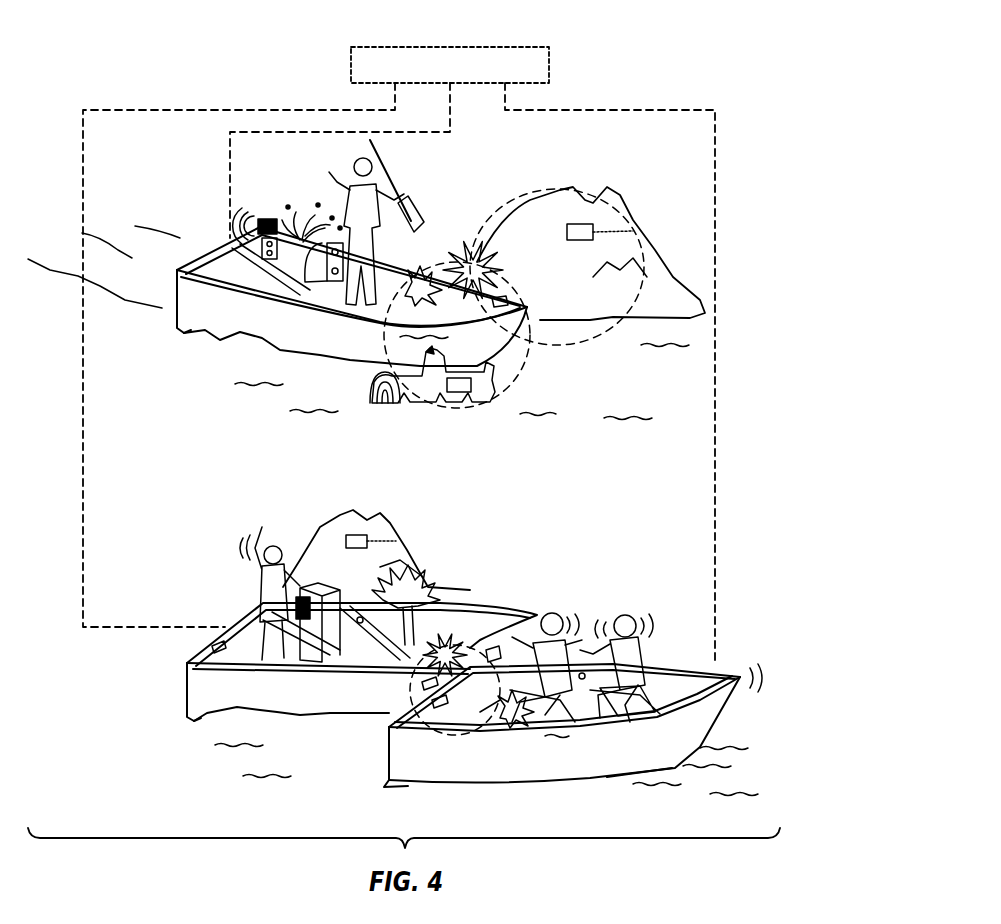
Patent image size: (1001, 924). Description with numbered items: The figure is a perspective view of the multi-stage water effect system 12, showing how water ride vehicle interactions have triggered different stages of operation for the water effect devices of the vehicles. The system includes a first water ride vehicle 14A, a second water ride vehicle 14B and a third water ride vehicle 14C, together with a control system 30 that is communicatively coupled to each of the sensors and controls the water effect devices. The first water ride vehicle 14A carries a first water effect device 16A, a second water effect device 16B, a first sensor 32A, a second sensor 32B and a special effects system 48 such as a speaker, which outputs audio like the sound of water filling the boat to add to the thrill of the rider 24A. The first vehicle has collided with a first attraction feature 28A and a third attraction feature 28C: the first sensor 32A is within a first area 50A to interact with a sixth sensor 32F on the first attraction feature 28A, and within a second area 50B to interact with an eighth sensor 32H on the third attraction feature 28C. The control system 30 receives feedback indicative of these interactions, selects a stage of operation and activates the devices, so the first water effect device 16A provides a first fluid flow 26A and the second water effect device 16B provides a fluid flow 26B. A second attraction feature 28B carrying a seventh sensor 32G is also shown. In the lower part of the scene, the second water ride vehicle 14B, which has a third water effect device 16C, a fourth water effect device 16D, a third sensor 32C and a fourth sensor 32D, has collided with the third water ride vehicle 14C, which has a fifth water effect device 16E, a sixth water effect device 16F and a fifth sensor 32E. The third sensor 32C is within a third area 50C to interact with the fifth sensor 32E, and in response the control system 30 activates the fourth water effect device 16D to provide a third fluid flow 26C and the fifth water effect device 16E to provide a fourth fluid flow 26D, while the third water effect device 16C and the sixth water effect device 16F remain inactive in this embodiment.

The multi-stage water effect system 12 is at (644, 34).
The control system 30 is at (450, 47).
The first water ride vehicle 14A is at (218, 247).
The second water ride vehicle 14B is at (240, 618).
The third water ride vehicle 14C is at (722, 670).
The first water effect device 16A is at (408, 283).
The second water effect device 16B is at (293, 278).
The third water effect device 16C is at (253, 310).
The fourth water effect device 16D is at (388, 760).
The fifth water effect device 16E is at (518, 648).
The sixth water effect device 16F is at (595, 652).
The rider 24A is at (356, 160).
The first fluid flow 26A is at (378, 298).
The fluid flow 26B is at (301, 198).
The third fluid flow 26C is at (447, 587).
The fourth fluid flow 26D is at (545, 730).
The first attraction feature 28A is at (485, 220).
The second attraction feature 28B is at (305, 540).
The third attraction feature 28C is at (375, 398).
The first sensor 32A is at (498, 306).
The second sensor 32B is at (260, 252).
The third sensor 32C is at (490, 648).
The fourth sensor 32D is at (215, 640).
The fifth sensor 32E is at (430, 680).
The sixth sensor 32F is at (633, 230).
The seventh sensor 32G is at (397, 540).
The eighth sensor 32H is at (455, 393).
The special effects system 48 is at (263, 214).
The first area 50A is at (553, 190).
The second area 50B is at (527, 362).
The third area 50C is at (412, 688).